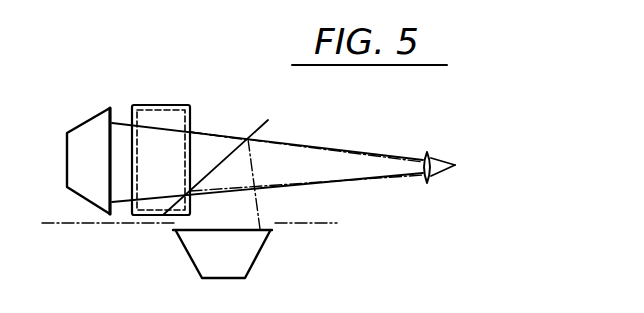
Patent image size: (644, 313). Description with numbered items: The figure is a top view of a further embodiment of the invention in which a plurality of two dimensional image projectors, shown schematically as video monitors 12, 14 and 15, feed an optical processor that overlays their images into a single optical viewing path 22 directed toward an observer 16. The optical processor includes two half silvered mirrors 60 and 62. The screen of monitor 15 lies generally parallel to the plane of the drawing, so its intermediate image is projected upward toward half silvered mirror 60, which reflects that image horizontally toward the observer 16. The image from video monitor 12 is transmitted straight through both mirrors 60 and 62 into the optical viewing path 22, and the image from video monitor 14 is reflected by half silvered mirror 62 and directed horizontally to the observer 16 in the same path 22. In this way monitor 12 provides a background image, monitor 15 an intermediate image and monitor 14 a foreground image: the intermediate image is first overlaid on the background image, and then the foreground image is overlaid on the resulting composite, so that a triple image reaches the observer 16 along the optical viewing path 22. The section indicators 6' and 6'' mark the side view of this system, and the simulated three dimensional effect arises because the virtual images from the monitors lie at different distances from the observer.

The video monitor 12 is at (82, 123).
The video monitor 14 is at (256, 258).
The video monitor 15 is at (167, 111).
The observer 16 is at (433, 156).
The optical viewing path 22 is at (308, 173).
The half silvered mirror 60 is at (190, 123).
The half silvered mirror 62 is at (262, 121).
The section line 6' is at (109, 246).
The section line 6'' is at (321, 246).